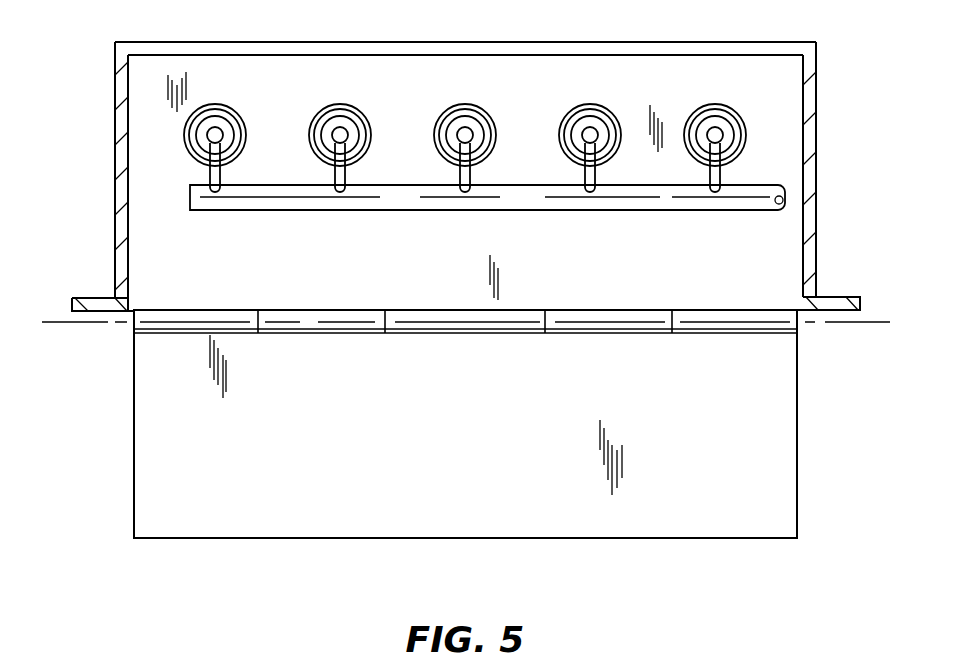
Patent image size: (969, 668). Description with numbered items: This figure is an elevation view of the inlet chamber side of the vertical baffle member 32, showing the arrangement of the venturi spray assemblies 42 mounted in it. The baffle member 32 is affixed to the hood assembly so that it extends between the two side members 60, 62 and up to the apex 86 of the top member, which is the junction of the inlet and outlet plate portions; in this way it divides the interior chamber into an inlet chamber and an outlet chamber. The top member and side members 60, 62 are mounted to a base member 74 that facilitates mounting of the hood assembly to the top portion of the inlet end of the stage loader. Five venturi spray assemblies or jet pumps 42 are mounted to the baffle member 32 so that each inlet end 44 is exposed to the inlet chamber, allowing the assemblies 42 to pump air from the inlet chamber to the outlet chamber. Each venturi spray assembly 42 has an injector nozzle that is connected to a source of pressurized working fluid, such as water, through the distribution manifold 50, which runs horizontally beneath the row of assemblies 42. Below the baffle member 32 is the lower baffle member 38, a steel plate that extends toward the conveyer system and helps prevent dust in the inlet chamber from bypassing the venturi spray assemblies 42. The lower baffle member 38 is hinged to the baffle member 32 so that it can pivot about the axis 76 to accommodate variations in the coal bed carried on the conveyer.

The apex 86 is at (493, 42).
The side member 62 is at (115, 175).
The side member 60 is at (816, 172).
The base member 74 is at (87, 297).
The axis 76 is at (67, 324).
The lower baffle member 38 is at (452, 450).
The baffle member 32 is at (540, 101).
The distribution manifold 50 is at (285, 212).
The venturi spray assembly 42 is at (228, 105).
The inlet end 44 is at (358, 110).